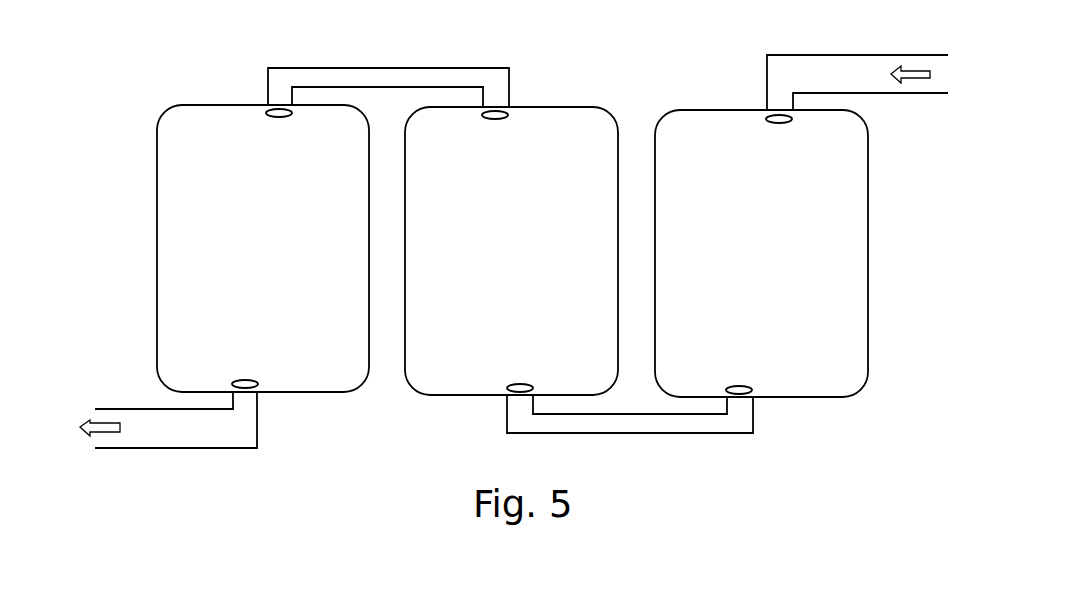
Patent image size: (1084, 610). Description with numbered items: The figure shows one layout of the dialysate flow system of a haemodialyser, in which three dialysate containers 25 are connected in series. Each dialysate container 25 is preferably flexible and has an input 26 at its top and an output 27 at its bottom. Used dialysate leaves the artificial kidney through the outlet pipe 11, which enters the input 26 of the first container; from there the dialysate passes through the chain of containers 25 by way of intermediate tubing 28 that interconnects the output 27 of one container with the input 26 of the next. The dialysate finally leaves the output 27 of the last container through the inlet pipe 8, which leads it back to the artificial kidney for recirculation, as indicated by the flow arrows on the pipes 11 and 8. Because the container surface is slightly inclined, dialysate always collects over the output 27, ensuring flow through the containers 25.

The dialysate container 25 is at (512, 251).
The input 26 is at (277, 122).
The output 27 is at (242, 378).
The inlet pipe 8 is at (168, 420).
The outlet pipe 11 is at (857, 82).
The intermediate tubing 28 is at (687, 427).